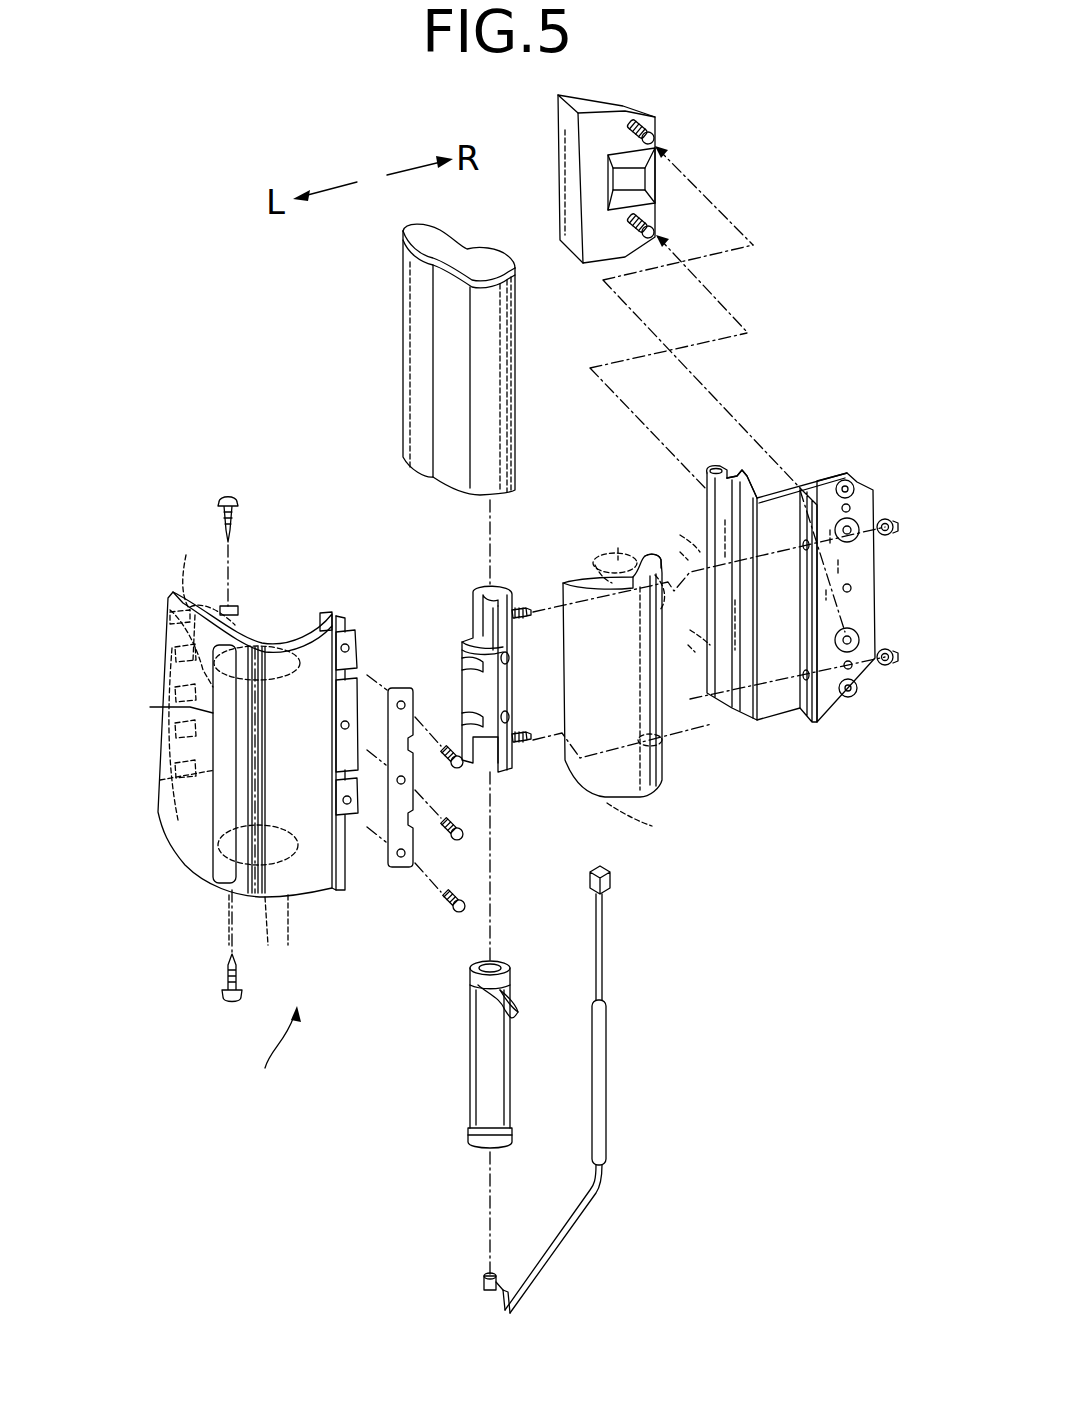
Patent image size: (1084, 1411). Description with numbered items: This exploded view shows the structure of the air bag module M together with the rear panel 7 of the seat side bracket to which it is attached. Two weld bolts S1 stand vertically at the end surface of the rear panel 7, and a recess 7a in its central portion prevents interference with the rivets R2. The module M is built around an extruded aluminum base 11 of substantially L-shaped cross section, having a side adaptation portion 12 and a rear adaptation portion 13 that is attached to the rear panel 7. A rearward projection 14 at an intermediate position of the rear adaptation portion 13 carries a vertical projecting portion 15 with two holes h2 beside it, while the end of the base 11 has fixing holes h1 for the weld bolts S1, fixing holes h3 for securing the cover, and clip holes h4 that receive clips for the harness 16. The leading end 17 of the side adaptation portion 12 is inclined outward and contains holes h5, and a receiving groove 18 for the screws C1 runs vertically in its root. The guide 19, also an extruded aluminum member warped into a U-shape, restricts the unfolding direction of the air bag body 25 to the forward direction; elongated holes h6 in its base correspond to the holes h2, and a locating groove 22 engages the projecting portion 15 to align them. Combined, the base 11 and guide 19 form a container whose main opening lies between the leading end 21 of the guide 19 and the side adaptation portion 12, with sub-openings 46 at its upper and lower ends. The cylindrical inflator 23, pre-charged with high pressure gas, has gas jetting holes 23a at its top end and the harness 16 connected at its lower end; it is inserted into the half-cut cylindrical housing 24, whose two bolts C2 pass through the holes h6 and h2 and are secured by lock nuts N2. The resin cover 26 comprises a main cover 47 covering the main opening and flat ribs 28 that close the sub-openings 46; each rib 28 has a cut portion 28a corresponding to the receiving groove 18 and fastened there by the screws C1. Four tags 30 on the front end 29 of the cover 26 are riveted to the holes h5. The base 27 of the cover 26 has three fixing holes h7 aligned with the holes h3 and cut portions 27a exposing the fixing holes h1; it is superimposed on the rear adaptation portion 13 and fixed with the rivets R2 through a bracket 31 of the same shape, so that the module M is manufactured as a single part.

The rear panel 7 is at (639, 153).
The recess 7a is at (640, 176).
The weld bolts S1 is at (654, 132).
The base 11 is at (807, 558).
The side adaptation portion 12 is at (770, 468).
The rear adaptation portion 13 is at (840, 478).
The rearward projection 14 is at (804, 704).
The projecting portion 15 is at (757, 696).
The harness 16 is at (603, 1090).
The leading end 17 is at (708, 466).
The receiving groove 18 is at (738, 474).
The guide 19 is at (616, 536).
The leading end of the guide 21 is at (614, 644).
The locating groove 22 is at (646, 553).
The inflator 23 is at (486, 1054).
The gas jetting holes 23a is at (514, 1012).
The housing 24 is at (464, 604).
The air bag body 25 is at (392, 368).
The cover 26 is at (255, 752).
The base of the cover 27 is at (342, 632).
The cut portions 27a is at (350, 722).
The ribs 28 is at (237, 606).
The cut portion 28a is at (250, 607).
The front end of the cover 29 is at (192, 607).
The tags 30 is at (115, 800).
The bracket 31 is at (403, 870).
The sub-openings 46 is at (648, 525).
The main cover 47 is at (150, 707).
The screws C1 is at (228, 494).
The bolts C2 is at (524, 610).
The rivets R2 is at (470, 867).
The lock nuts N2 is at (891, 524).
The fixing holes h1 is at (860, 535).
The holes h2 is at (805, 538).
The fixing holes h3 is at (851, 506).
The clip holes h4 is at (850, 480).
The holes h5 is at (686, 550).
The elongated holes h6 is at (605, 558).
The fixing holes h7 is at (352, 648).
The air bag module M is at (274, 1059).